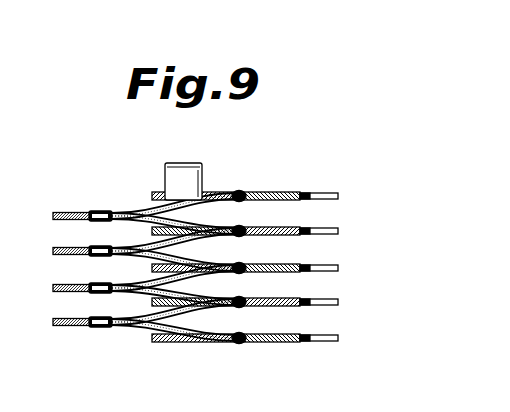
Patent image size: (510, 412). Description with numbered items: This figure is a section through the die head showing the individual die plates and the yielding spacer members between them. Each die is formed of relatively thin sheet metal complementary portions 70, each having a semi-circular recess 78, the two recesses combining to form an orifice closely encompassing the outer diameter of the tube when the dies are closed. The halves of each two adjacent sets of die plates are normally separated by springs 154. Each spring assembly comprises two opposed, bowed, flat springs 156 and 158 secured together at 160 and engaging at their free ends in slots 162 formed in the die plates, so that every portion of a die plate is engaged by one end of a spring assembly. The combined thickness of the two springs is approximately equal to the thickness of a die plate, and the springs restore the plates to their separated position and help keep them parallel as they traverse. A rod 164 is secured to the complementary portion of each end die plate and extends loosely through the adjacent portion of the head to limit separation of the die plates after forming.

The complementary die portion 70 is at (293, 193).
The semi-circular recess 78 is at (309, 337).
The spring 154 is at (65, 218).
The bowed flat spring 156 is at (213, 203).
The bowed flat spring 158 is at (266, 197).
The securing point 160 is at (92, 212).
The slot 162 is at (230, 222).
The rod 164 is at (182, 168).